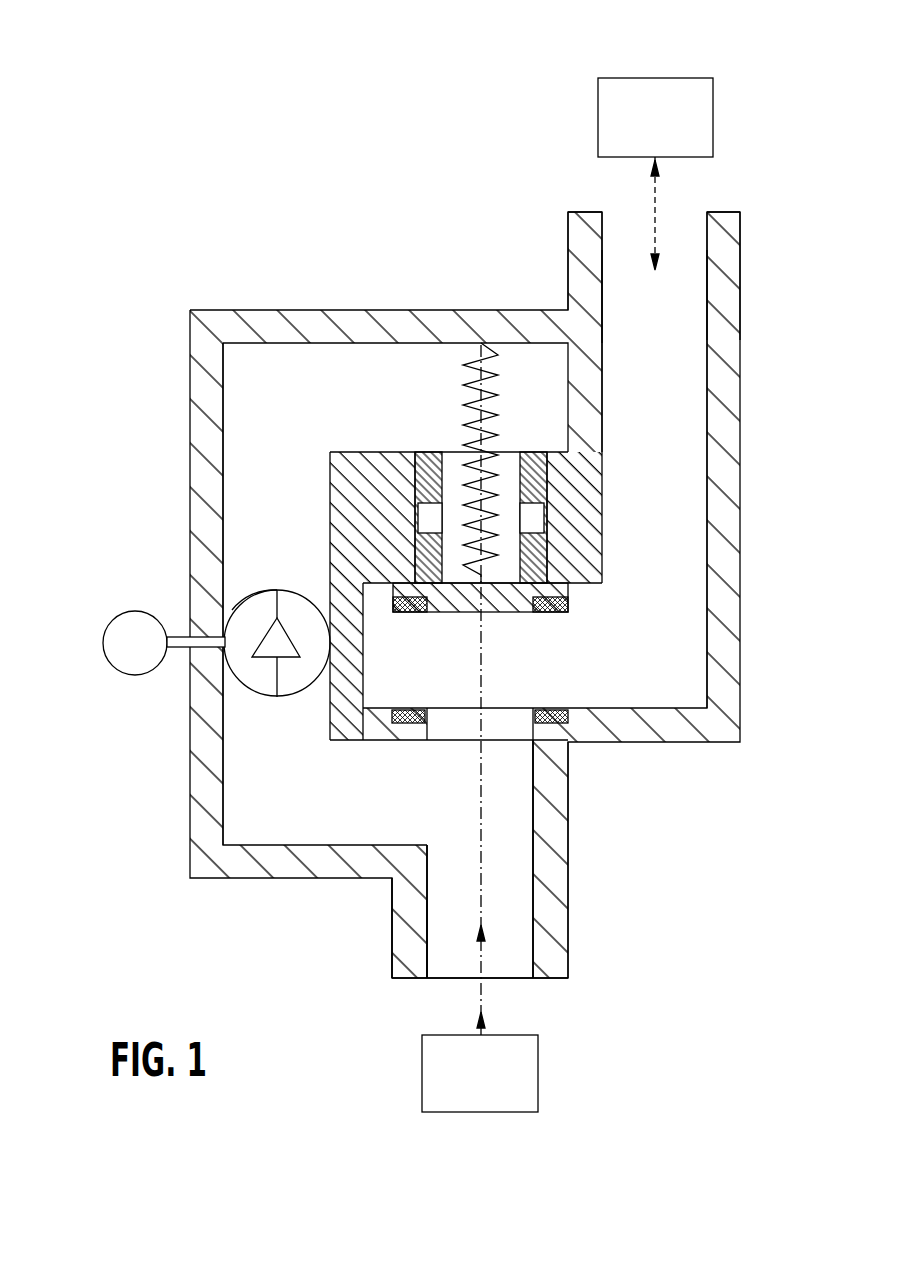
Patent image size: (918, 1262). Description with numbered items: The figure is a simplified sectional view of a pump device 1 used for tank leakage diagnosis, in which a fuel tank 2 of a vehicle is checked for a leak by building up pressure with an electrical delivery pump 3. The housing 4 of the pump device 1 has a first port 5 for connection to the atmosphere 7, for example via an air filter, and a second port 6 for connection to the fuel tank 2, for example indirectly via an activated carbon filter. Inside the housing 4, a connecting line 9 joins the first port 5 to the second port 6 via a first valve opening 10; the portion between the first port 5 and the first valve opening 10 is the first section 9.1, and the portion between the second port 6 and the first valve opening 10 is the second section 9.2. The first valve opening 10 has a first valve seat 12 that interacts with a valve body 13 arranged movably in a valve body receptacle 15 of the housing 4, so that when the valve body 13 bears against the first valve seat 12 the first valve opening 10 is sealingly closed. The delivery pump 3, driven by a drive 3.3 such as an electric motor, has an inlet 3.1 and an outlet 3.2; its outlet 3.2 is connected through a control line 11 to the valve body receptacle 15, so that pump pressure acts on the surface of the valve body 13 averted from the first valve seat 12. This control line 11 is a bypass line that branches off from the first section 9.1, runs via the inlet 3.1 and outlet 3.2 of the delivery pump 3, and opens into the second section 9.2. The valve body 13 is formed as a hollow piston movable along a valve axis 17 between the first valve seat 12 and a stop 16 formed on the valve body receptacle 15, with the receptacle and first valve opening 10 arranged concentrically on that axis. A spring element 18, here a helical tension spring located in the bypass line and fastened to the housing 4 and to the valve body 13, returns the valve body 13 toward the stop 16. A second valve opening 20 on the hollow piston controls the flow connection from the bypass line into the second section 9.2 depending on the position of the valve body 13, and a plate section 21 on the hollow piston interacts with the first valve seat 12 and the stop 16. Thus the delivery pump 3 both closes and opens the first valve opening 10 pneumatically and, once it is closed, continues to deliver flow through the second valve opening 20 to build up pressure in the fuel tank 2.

The pump device 1 is at (286, 204).
The fuel tank 2 is at (655, 95).
The delivery pump 3 is at (176, 666).
The inlet 3.1 is at (250, 683).
The outlet 3.2 is at (257, 607).
The drive 3.3 is at (110, 668).
The housing 4 is at (205, 823).
The first port 5 is at (410, 935).
The second port 6 is at (570, 248).
The atmosphere 7 is at (513, 1077).
The connecting line 9 is at (683, 418).
The first section 9.1 is at (507, 880).
The second section 9.2 is at (683, 290).
The first valve opening 10 is at (515, 725).
The control line 11 is at (255, 545).
The first valve seat 12 is at (555, 705).
The valve body 13 is at (533, 476).
The valve body receptacle 15 is at (413, 483).
The stop 16 is at (596, 609).
The valve axis 17 is at (480, 887).
The spring element 18 is at (470, 355).
The second valve opening 20 is at (427, 520).
The plate section 21 is at (453, 613).